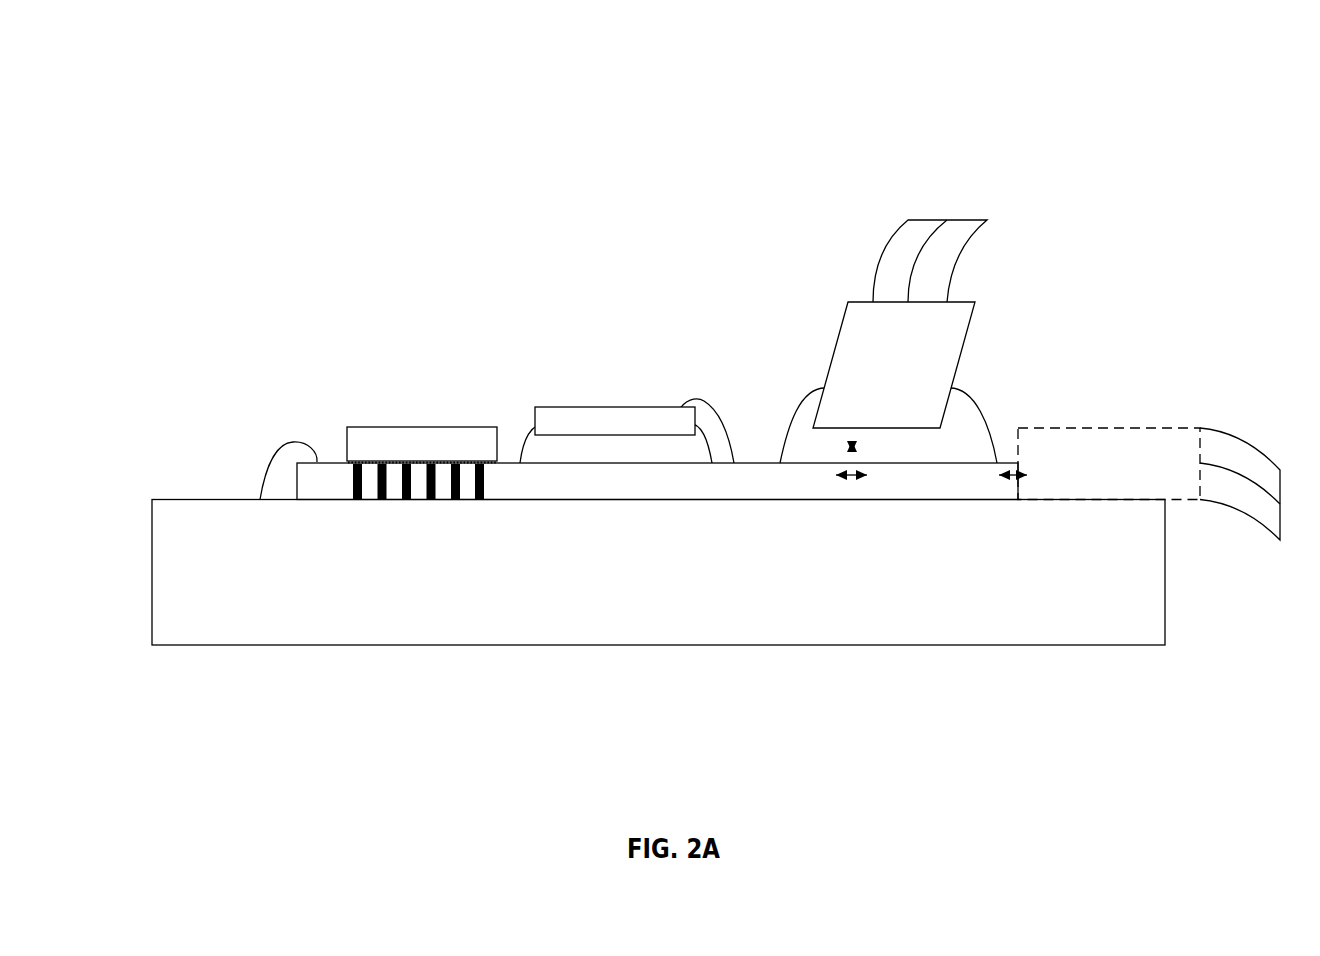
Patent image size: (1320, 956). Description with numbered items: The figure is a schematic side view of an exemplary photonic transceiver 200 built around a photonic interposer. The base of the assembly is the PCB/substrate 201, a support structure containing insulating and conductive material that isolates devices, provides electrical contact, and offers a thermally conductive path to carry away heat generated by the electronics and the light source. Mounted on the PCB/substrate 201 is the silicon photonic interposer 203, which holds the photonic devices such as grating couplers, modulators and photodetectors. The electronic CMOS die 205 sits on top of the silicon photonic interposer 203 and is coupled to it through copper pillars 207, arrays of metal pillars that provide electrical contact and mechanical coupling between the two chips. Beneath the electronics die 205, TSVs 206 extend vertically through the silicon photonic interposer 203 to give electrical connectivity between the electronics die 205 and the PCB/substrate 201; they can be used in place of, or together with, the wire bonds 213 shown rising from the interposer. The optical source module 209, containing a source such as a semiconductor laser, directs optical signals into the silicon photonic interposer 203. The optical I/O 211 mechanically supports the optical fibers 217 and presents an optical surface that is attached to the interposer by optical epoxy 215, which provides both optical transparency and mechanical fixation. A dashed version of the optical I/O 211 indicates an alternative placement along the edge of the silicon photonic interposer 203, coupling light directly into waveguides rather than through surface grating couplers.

The photonic transceiver 200 is at (228, 116).
The PCB/substrate 201 is at (677, 599).
The silicon photonic interposer 203 is at (792, 492).
The electronic CMOS die 205 is at (478, 456).
The through silicon vias (TSVs) 206 is at (440, 505).
The copper pillars 207 is at (340, 474).
The optical source module 209 is at (683, 434).
The optical input/output (I/O) 211 is at (915, 392).
The wire bonds 213 is at (271, 435).
The optical epoxy 215 is at (620, 461).
The optical fibers 217 is at (1240, 428).